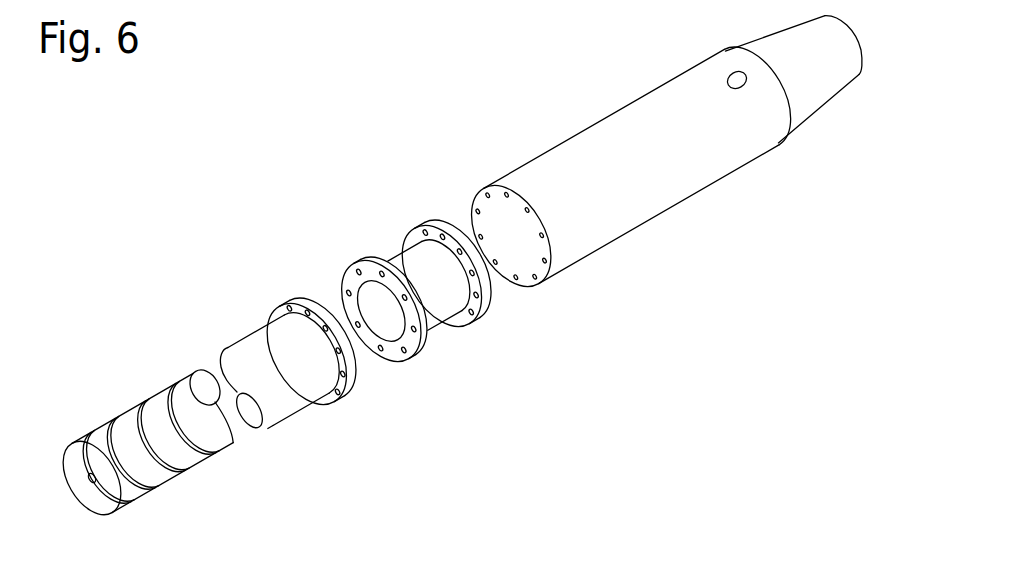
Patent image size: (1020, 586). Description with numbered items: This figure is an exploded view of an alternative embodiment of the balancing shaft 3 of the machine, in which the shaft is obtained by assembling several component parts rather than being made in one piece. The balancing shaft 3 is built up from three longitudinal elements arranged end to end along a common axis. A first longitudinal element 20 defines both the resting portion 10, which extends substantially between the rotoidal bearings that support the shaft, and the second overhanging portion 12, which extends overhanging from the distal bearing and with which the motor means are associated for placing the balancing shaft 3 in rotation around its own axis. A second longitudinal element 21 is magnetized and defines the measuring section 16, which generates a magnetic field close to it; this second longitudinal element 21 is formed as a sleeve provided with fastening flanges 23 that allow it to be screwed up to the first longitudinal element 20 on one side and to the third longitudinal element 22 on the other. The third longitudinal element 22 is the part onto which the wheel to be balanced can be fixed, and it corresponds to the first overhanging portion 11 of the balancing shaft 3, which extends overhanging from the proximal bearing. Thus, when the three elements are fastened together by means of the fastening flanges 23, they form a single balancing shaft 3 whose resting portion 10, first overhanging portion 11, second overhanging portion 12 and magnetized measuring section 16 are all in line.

The balancing shaft 3 is at (250, 268).
The resting portion 10 is at (250, 392).
The first overhanging portion 11 is at (646, 201).
The second overhanging portion 12 is at (213, 491).
The measuring section 16 is at (415, 268).
The first longitudinal element 20 is at (247, 356).
The second longitudinal element 21 is at (392, 258).
The third longitudinal element 22 is at (638, 138).
The fastening flanges 23 is at (318, 297).